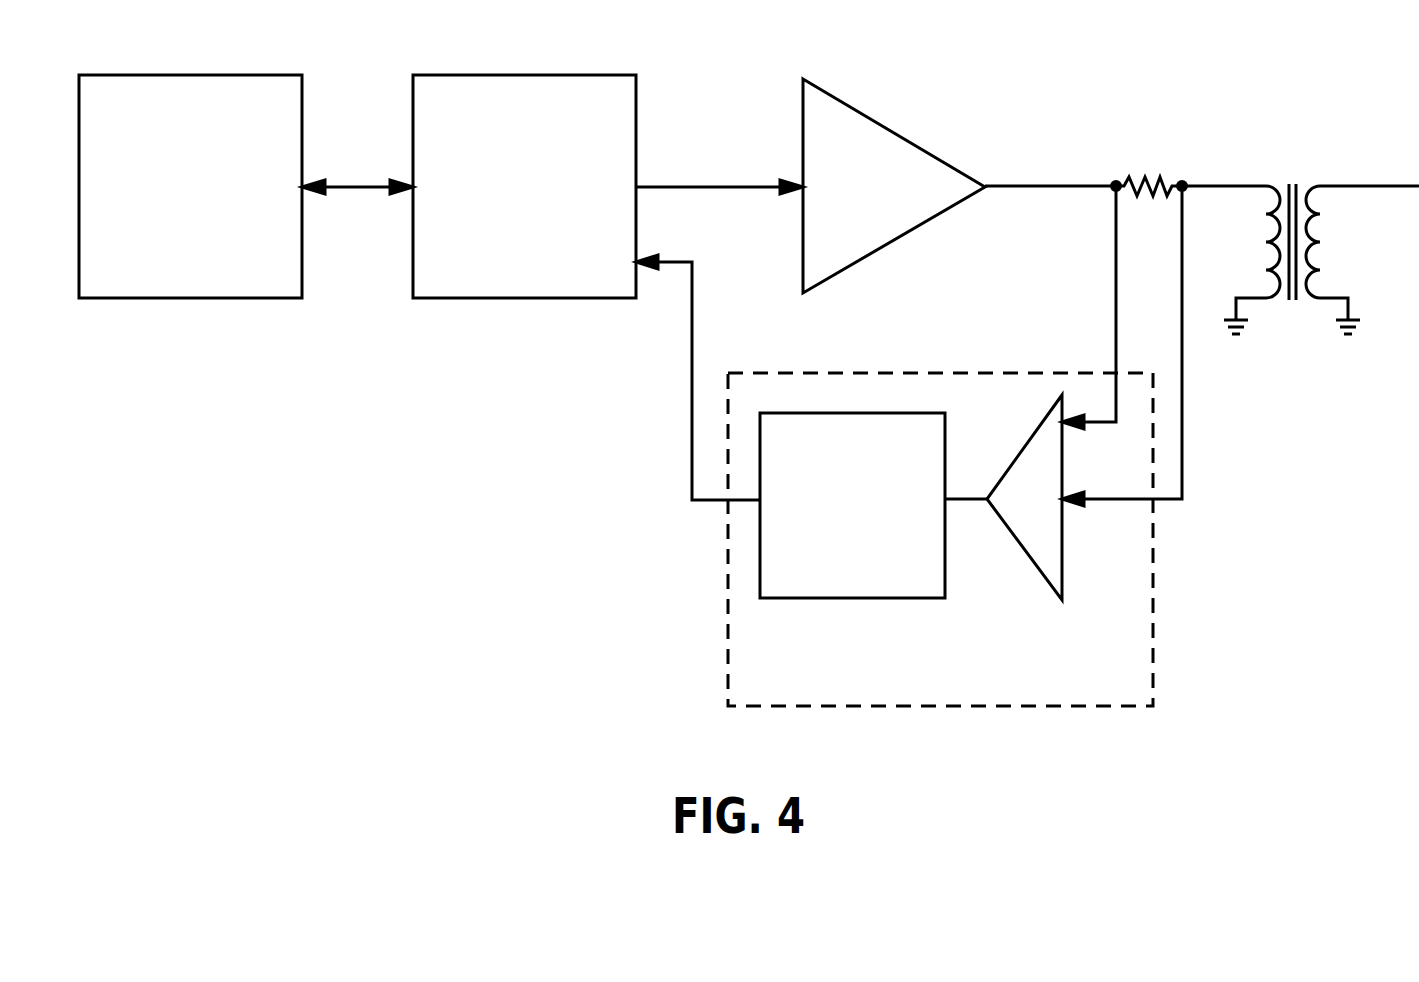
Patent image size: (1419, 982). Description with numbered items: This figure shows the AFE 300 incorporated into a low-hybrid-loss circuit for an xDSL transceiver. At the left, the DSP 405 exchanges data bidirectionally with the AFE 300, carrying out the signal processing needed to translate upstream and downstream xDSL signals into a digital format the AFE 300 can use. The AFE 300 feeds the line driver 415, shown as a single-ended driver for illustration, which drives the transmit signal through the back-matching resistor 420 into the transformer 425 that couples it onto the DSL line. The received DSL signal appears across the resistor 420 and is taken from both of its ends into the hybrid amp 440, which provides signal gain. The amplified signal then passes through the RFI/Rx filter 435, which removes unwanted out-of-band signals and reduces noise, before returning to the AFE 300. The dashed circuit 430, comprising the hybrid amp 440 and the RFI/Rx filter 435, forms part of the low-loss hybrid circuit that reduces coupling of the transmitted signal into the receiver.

The DSP 405 is at (190, 186).
The AFE 300 is at (524, 186).
The line driver 415 is at (852, 105).
The resistor 420 is at (1145, 176).
The transformer 425 is at (1290, 177).
The circuit 430 is at (928, 707).
The RFI/Rx filter 435 is at (852, 505).
The hybrid amp 440 is at (1023, 447).